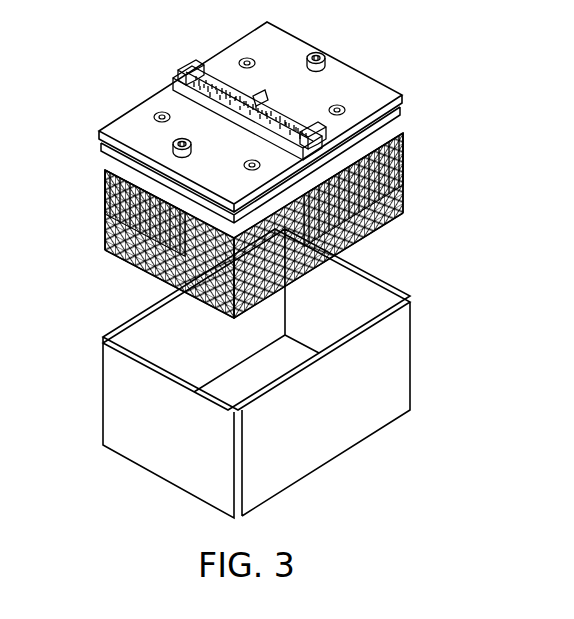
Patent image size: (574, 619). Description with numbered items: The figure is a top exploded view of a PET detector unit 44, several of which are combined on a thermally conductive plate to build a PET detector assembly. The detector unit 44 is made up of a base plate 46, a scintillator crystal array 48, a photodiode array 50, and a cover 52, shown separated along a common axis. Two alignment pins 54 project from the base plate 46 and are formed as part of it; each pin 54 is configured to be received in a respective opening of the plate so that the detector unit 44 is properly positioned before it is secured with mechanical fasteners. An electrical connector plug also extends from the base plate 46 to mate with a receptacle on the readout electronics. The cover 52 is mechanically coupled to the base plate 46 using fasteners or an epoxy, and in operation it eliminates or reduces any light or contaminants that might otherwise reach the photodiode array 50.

The PET detector unit 44 is at (428, 18).
The base plate 46 is at (99, 132).
The scintillator crystal array 48 is at (103, 222).
The photodiode array 50 is at (100, 150).
The cover 52 is at (103, 384).
The alignment pin 54 is at (318, 56).